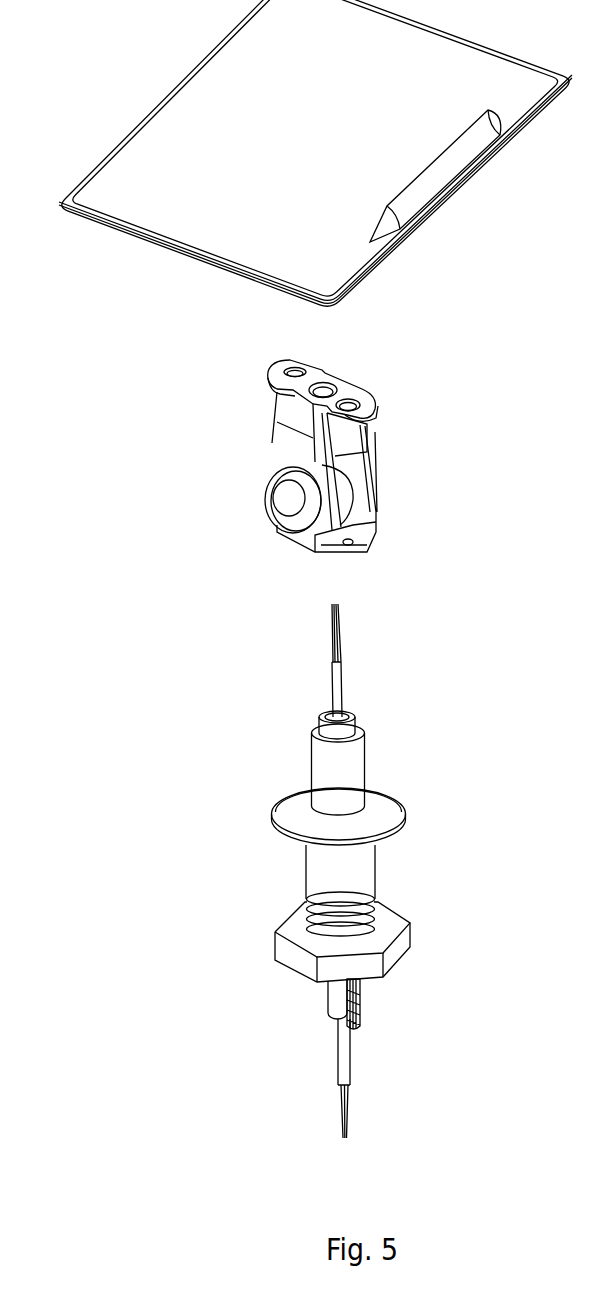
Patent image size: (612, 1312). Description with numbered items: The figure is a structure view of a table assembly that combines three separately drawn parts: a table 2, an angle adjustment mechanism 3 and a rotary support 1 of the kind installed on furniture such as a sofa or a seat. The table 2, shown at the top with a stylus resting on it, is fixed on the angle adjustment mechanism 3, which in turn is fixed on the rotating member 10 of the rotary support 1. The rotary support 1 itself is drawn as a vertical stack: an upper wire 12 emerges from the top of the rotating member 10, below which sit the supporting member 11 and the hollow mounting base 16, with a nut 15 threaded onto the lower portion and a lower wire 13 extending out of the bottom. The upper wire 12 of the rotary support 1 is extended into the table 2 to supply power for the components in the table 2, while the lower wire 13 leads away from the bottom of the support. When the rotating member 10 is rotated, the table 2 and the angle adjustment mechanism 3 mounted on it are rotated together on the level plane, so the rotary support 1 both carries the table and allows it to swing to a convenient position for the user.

The rotary support 1 is at (330, 871).
The table 2 is at (195, 96).
The angle adjustment mechanism 3 is at (270, 457).
The rotating member 10 is at (358, 755).
The supporting member 11 is at (330, 993).
The upper wire 12 is at (339, 680).
The lower wire 13 is at (348, 1073).
The nut 15 is at (403, 942).
The mounting base 16 is at (360, 870).